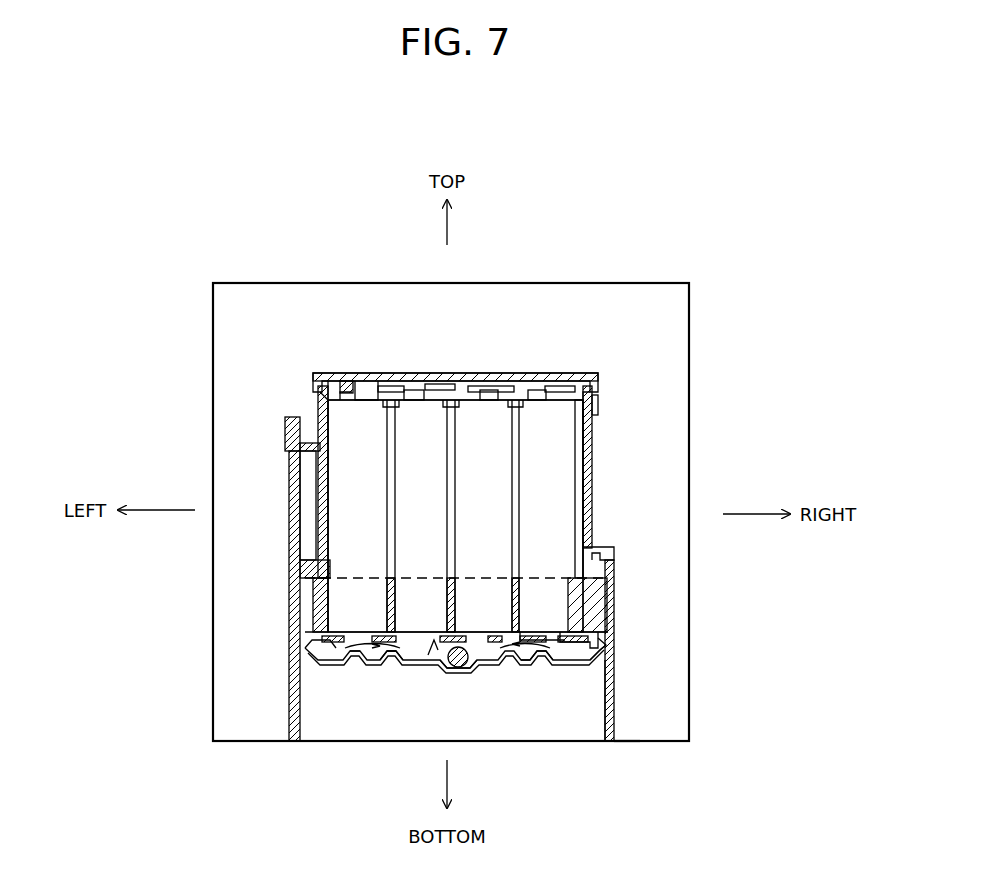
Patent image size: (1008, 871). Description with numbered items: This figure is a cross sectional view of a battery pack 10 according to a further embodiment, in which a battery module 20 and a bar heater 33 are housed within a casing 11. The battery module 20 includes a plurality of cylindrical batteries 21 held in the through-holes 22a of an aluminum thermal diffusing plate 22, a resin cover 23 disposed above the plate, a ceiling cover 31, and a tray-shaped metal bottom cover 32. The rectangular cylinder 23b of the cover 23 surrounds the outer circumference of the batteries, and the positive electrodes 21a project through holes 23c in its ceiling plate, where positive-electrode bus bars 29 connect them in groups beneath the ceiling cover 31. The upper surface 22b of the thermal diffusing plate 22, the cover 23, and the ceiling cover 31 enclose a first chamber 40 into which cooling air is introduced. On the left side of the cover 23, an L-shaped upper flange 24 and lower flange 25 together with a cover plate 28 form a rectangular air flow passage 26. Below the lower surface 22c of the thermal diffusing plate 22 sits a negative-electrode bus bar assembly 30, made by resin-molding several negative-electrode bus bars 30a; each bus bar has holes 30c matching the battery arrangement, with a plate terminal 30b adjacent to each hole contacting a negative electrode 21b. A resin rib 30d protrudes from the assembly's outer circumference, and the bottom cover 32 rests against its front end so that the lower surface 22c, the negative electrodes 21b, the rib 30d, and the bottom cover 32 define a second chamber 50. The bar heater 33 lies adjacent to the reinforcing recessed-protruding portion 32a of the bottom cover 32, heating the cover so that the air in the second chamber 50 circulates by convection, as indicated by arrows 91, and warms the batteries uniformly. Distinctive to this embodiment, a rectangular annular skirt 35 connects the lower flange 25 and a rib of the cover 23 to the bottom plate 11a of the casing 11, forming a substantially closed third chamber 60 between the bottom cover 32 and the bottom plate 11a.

The battery pack 10 is at (762, 240).
The casing 11 is at (696, 349).
The bottom plate 11a is at (666, 744).
The battery module 20 is at (522, 350).
The cylindrical battery 21 is at (554, 528).
The positive electrode 21a is at (490, 392).
The negative electrode 21b is at (560, 648).
The thermal diffusing plate 22 is at (609, 600).
The through-hole 22a is at (553, 642).
The upper surface 22b is at (609, 556).
The lower surface 22c is at (610, 643).
The cover 23 is at (594, 446).
The rectangular cylinder 23b is at (598, 410).
The hole 23c is at (372, 372).
The upper flange 24 is at (311, 441).
The lower flange 25 is at (290, 598).
The air flow passage 26 is at (302, 516).
The cover plate 28 is at (283, 448).
The positive-electrode bus bar 29 is at (432, 386).
The negative-electrode bus bar assembly 30 is at (308, 652).
The negative-electrode bus bar 30a is at (356, 660).
The plate terminal 30b is at (319, 663).
The hole 30c is at (441, 668).
The rib 30d is at (604, 663).
The ceiling cover 31 is at (582, 374).
The bottom cover 32 is at (400, 668).
The recessed-protruding portion 32a is at (471, 670).
The bar heater 33 is at (434, 670).
The skirt 35 is at (632, 742).
The first chamber 40 is at (578, 470).
The second chamber 50 is at (468, 668).
The third chamber 60 is at (592, 690).
The arrows 91 is at (324, 646).